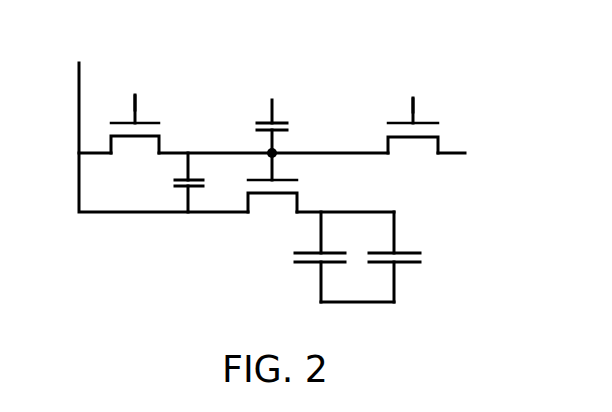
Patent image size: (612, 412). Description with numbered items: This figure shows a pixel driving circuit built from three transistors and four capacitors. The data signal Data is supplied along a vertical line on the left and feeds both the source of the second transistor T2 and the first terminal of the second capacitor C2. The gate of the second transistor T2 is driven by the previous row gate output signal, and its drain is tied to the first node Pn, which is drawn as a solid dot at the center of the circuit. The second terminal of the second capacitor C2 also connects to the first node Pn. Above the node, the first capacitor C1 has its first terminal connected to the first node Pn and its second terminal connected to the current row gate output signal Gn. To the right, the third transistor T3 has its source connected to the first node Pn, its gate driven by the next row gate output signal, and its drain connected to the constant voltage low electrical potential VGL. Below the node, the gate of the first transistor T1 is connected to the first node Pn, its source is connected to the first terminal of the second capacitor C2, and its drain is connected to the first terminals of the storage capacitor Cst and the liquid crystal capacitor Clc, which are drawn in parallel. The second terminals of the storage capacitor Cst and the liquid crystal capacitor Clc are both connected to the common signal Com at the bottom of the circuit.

The data signal Data is at (152, 127).
The second transistor T2 is at (135, 129).
The second capacitor C2 is at (174, 182).
The current row gate output signal Gn is at (272, 100).
The first capacitor C1 is at (287, 134).
The first node Pn is at (287, 163).
The first transistor T1 is at (272, 188).
The third transistor T3 is at (413, 130).
The constant voltage low electrical potential VGL is at (473, 154).
The storage capacitor Cst is at (297, 257).
The liquid crystal capacitor Clc is at (421, 257).
The common signal Com is at (357, 317).